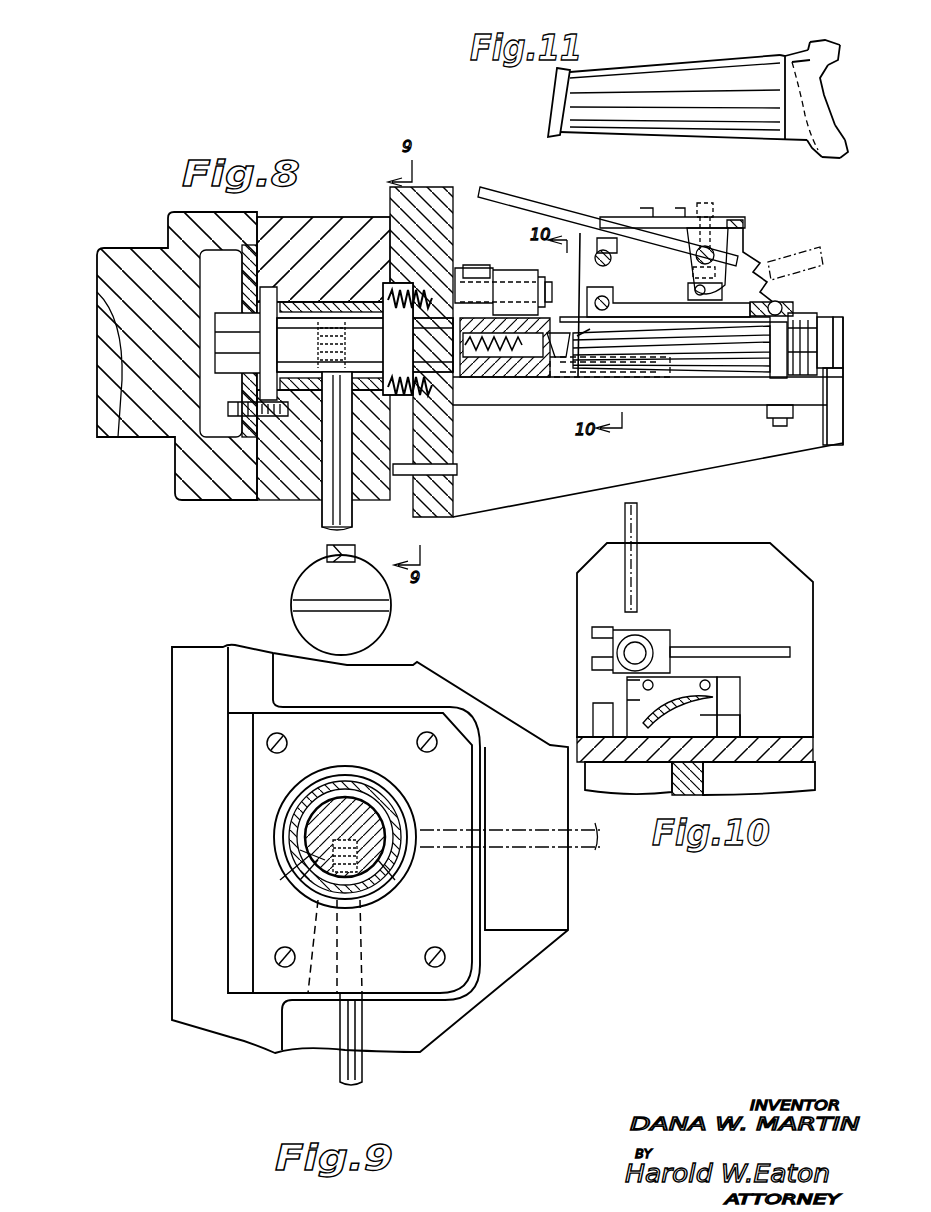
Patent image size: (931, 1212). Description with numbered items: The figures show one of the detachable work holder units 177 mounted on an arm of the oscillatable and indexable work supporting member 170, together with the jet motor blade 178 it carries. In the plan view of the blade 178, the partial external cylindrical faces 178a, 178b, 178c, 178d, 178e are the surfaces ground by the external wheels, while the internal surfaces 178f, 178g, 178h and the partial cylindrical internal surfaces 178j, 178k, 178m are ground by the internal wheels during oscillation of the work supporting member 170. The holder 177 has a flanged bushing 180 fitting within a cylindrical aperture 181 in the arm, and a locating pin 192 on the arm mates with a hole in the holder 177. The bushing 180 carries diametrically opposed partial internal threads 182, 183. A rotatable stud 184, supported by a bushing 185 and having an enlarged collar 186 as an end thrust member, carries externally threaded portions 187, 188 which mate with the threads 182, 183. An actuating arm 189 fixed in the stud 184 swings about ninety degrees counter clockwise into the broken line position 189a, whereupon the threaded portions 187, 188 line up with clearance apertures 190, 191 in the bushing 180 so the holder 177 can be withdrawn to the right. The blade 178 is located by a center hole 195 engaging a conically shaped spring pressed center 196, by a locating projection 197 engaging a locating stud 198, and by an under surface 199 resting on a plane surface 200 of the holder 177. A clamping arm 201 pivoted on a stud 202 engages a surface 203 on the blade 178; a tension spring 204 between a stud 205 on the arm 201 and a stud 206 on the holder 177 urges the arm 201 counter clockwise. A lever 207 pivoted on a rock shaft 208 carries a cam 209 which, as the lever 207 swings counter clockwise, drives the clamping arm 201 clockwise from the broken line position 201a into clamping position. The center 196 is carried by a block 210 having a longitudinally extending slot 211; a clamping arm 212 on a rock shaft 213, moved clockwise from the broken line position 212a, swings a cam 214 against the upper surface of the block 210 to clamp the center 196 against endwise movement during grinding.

In FIG. 8, the work supporting member 170 is at (123, 237).
In FIG. 9, the work supporting member 170 is at (474, 1022).
In FIG. 8, the work holder unit 177 is at (629, 207).
In FIG. 10, the work holder unit 177 is at (824, 718).
In FIG. 9, the work holder unit 177 is at (420, 876).
In FIG. 8, the jet motor blade 178 is at (706, 360).
In FIG. 11, the jet motor blade 178 is at (683, 78).
In FIG. 10, the jet motor blade 178 is at (720, 710).
In FIG. 11, the partial external cylindrical face 178a is at (828, 43).
In FIG. 11, the partial external cylindrical face 178b is at (838, 58).
In FIG. 11, the partial external cylindrical face 178c is at (830, 124).
In FIG. 11, the partial external cylindrical face 178d is at (845, 132).
In FIG. 11, the partial external cylindrical face 178e is at (846, 149).
In FIG. 11, the internal surface 178f is at (810, 46).
In FIG. 11, the internal surface 178g is at (798, 52).
In FIG. 11, the internal surface 178h is at (808, 58).
In FIG. 11, the partial cylindrical internal surface 178j is at (812, 152).
In FIG. 11, the partial cylindrical internal surface 178k is at (820, 155).
In FIG. 11, the partial cylindrical internal surface 178m is at (832, 160).
In FIG. 8, the flanged bushing 180 is at (403, 285).
In FIG. 9, the flanged bushing 180 is at (300, 805).
In FIG. 8, the cylindrical aperture 181 is at (385, 400).
In FIG. 8, the partial internal thread 182 is at (365, 342).
In FIG. 9, the partial internal thread 182 is at (357, 797).
In FIG. 8, the partial internal thread 183 is at (352, 345).
In FIG. 9, the partial internal thread 183 is at (370, 888).
In FIG. 8, the rotatable stud 184 is at (305, 300).
In FIG. 9, the rotatable stud 184 is at (300, 850).
In FIG. 8, the bushing 185 is at (338, 302).
In FIG. 8, the enlarged collar 186 is at (270, 390).
In FIG. 8, the externally threaded portion 187 is at (410, 311).
In FIG. 9, the externally threaded portion 187 is at (380, 818).
In FIG. 8, the externally threaded portion 188 is at (410, 370).
In FIG. 9, the externally threaded portion 188 is at (312, 880).
In FIG. 8, the actuating arm 189 is at (325, 552).
In FIG. 9, the actuating arm 189 is at (345, 1060).
In FIG. 9, the broken line position of actuating arm 189a is at (590, 856).
In FIG. 9, the clearance aperture 190 is at (290, 868).
In FIG. 9, the clearance aperture 191 is at (395, 862).
In FIG. 8, the locating pin 192 is at (455, 468).
In FIG. 8, the center hole 195 is at (583, 322).
In FIG. 8, the spring pressed center 196 is at (552, 332).
In FIG. 10, the spring pressed center 196 is at (675, 695).
In FIG. 8, the locating projection 197 is at (808, 313).
In FIG. 8, the locating stud 198 is at (826, 315).
In FIG. 8, the surface 199 is at (830, 375).
In FIG. 8, the plane surface 200 is at (813, 375).
In FIG. 8, the clamping arm 201 is at (642, 303).
In FIG. 8, the broken line position of clamping arm 201a is at (817, 254).
In FIG. 8, the stud 202 is at (665, 321).
In FIG. 8, the surface 203 is at (842, 312).
In FIG. 8, the tension spring 204 is at (755, 256).
In FIG. 8, the stud 205 is at (780, 302).
In FIG. 8, the stud 206 is at (752, 251).
In FIG. 8, the lever 207 is at (538, 205).
In FIG. 8, the rock shaft 208 is at (700, 240).
In FIG. 8, the cam 209 is at (690, 295).
In FIG. 8, the block 210 is at (535, 338).
In FIG. 10, the block 210 is at (630, 682).
In FIG. 8, the longitudinally extending slot 211 is at (518, 350).
In FIG. 10, the longitudinally extending slot 211 is at (630, 700).
In FIG. 10, the clamping arm 212 is at (768, 645).
In FIG. 10, the broken line position of clamping arm 212a is at (640, 513).
In FIG. 8, the rock shaft 213 is at (540, 292).
In FIG. 10, the rock shaft 213 is at (632, 650).
In FIG. 8, the cam 214 is at (508, 302).
In FIG. 10, the cam 214 is at (665, 645).